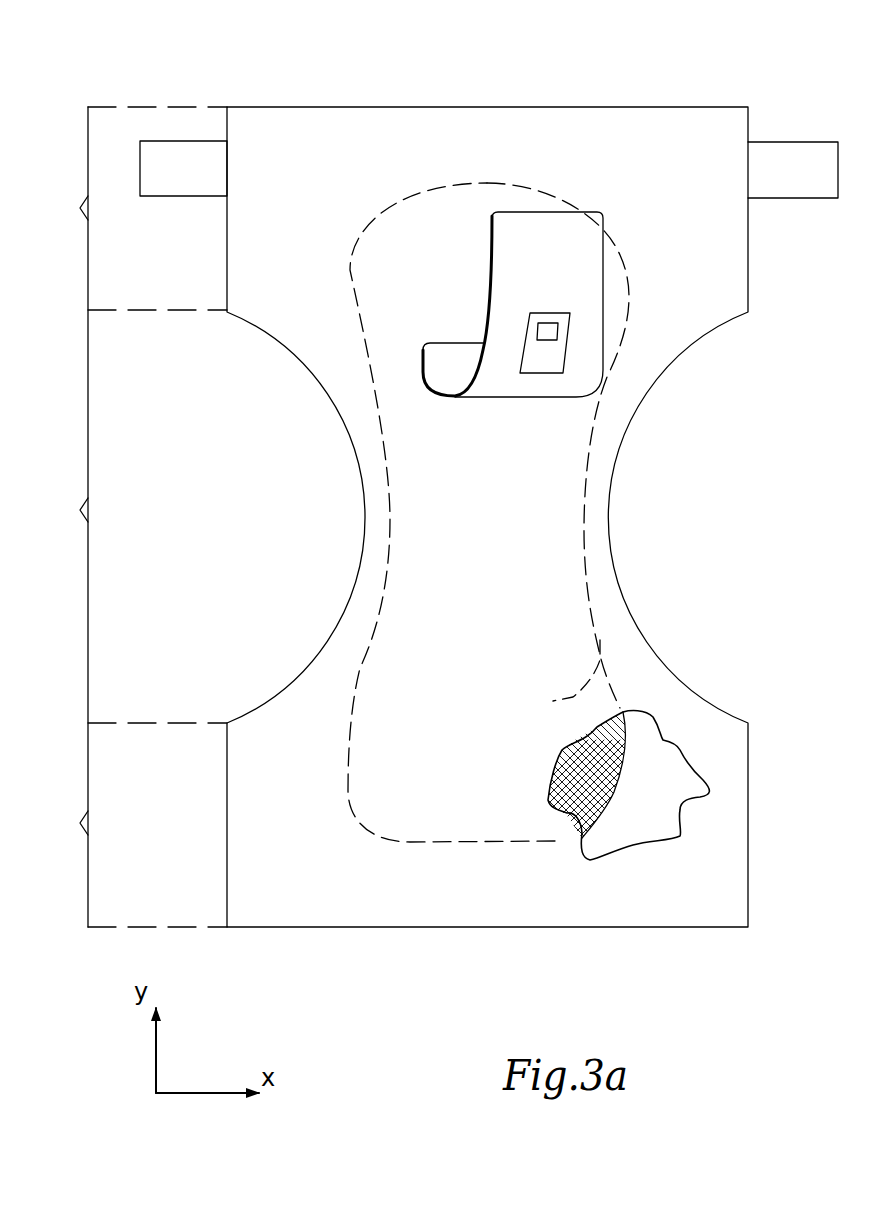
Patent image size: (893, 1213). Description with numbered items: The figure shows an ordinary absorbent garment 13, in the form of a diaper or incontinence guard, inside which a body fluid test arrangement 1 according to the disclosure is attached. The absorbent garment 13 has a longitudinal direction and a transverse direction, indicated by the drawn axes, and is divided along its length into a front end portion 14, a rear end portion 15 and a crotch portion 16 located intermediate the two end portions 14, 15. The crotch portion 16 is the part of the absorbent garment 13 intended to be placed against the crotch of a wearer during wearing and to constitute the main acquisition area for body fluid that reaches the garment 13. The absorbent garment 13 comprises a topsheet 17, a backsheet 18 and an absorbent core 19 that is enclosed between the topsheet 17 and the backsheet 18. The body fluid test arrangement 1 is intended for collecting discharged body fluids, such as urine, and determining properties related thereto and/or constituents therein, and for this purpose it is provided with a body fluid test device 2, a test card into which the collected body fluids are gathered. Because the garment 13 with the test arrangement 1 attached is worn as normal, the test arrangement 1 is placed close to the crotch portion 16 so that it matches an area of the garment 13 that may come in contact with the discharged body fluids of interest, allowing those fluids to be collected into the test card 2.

The absorbent garment 13 is at (777, 79).
The rear end portion 15 is at (130, 210).
The crotch portion 16 is at (60, 517).
The front end portion 14 is at (130, 824).
The topsheet 17 is at (508, 583).
The body fluid test arrangement 1 is at (479, 291).
The body fluid test device 2 is at (547, 357).
The backsheet 18 is at (671, 787).
The absorbent core 19 is at (588, 745).